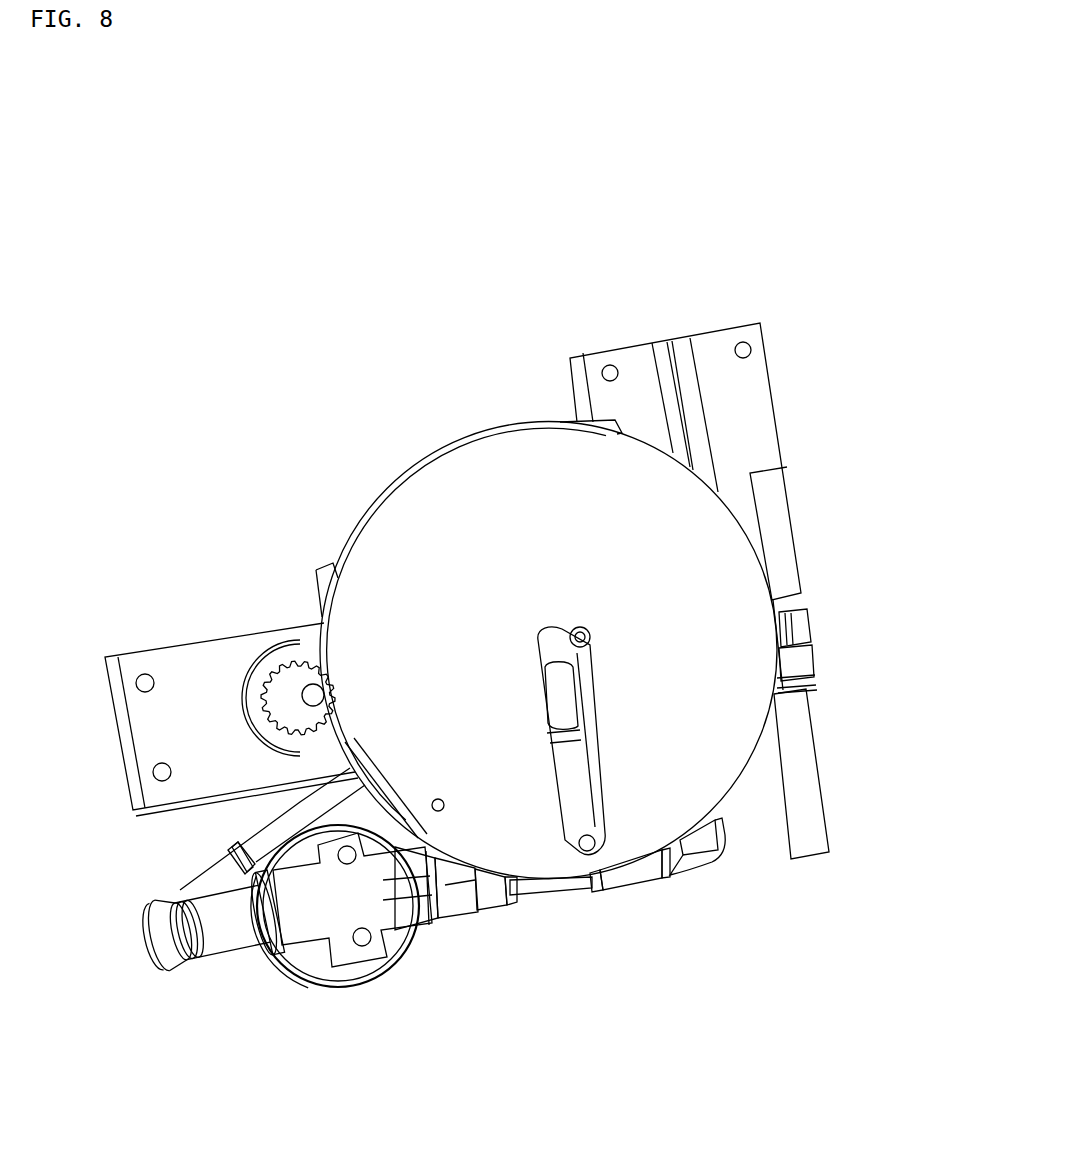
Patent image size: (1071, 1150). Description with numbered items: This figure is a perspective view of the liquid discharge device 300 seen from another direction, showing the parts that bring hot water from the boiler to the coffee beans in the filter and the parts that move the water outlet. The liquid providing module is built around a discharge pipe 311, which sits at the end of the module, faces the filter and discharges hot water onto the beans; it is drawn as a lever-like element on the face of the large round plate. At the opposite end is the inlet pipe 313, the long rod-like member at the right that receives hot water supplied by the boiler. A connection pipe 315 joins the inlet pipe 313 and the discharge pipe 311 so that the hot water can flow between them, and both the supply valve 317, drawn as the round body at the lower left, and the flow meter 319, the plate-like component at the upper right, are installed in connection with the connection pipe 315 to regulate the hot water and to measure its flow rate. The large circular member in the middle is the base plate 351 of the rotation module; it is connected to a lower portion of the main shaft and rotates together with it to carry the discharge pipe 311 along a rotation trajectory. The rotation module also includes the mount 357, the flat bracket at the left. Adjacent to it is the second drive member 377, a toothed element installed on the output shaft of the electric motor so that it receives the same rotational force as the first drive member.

The liquid discharge device 300 is at (203, 345).
The discharge pipe 311 is at (533, 665).
The inlet pipe 313 is at (807, 782).
The connection pipe 315 is at (300, 810).
The supply valve 317 is at (280, 978).
The flow meter 319 is at (717, 343).
The base plate 351 is at (520, 443).
The mount 357 is at (180, 660).
The second drive member 377 is at (300, 670).